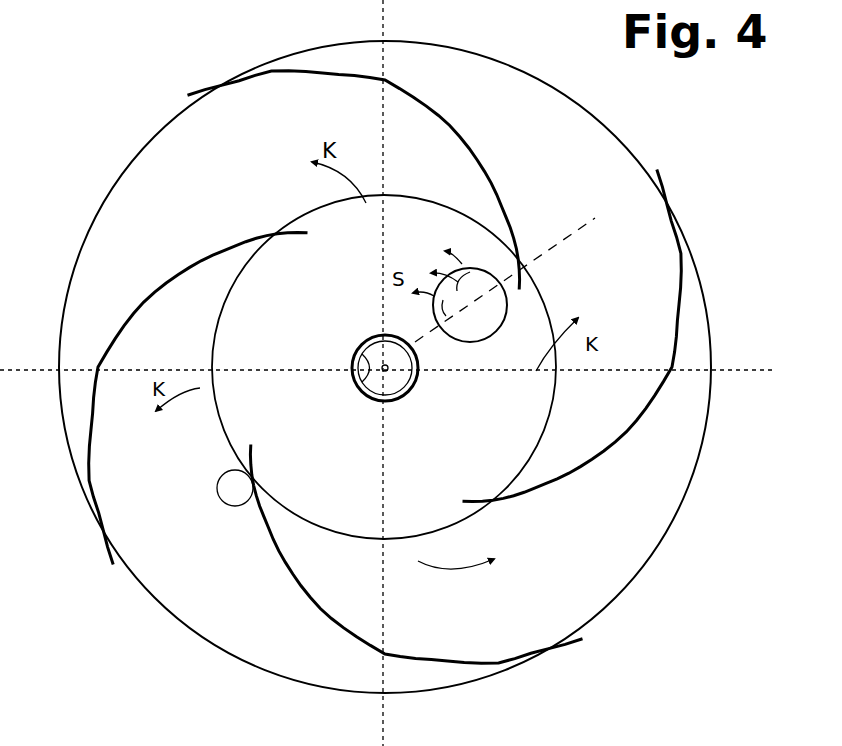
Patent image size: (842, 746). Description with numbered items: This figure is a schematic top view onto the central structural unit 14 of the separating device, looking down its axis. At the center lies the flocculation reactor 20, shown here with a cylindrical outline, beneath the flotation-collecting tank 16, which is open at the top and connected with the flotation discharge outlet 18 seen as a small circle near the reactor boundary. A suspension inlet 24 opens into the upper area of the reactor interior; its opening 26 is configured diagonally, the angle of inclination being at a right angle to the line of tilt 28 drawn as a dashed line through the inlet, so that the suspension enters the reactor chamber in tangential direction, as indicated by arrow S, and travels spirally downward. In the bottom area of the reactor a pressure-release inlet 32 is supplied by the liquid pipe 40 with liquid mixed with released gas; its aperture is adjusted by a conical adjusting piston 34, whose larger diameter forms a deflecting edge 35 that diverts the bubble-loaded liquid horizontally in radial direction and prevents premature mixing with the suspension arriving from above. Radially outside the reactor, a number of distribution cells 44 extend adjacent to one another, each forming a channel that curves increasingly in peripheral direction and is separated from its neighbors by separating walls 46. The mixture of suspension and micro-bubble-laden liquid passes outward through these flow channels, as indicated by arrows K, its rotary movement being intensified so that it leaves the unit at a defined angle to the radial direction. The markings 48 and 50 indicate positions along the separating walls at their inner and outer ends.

The central structural unit 14 is at (745, 172).
The flotation-collecting tank 16 is at (212, 650).
The flotation discharge outlet 18 is at (216, 501).
The flocculation reactor 20 is at (216, 323).
The suspension inlet 24 is at (486, 266).
The opening of the suspension inlet 26 is at (488, 314).
The line of tilt 28 is at (553, 245).
The pressure-release inlet 32 is at (366, 391).
The adjusting piston 34 is at (410, 393).
The deflecting edge 35 is at (388, 399).
The liquid pipe 40 is at (334, 16).
The distribution cells 44 is at (238, 186).
The separating walls 46 is at (442, 121).
The vane leading edge 48 is at (314, 236).
The vane trailing edge 50 is at (96, 572).